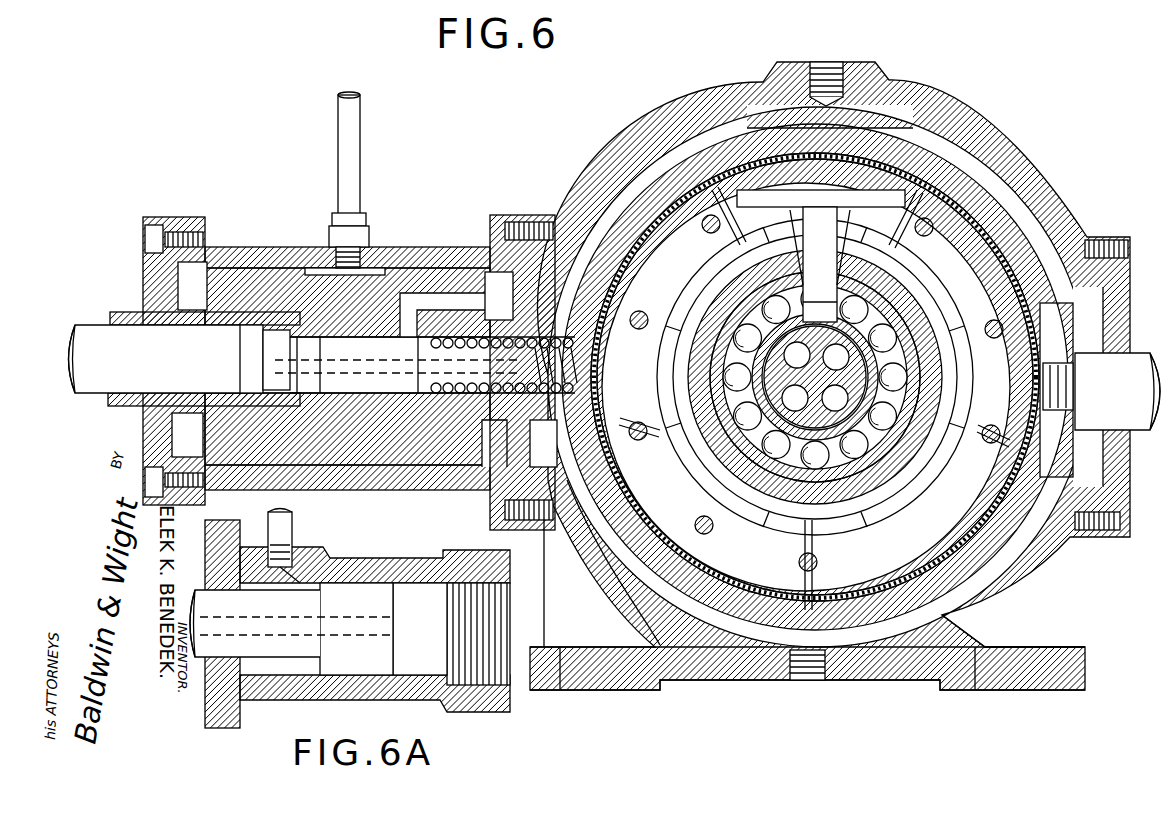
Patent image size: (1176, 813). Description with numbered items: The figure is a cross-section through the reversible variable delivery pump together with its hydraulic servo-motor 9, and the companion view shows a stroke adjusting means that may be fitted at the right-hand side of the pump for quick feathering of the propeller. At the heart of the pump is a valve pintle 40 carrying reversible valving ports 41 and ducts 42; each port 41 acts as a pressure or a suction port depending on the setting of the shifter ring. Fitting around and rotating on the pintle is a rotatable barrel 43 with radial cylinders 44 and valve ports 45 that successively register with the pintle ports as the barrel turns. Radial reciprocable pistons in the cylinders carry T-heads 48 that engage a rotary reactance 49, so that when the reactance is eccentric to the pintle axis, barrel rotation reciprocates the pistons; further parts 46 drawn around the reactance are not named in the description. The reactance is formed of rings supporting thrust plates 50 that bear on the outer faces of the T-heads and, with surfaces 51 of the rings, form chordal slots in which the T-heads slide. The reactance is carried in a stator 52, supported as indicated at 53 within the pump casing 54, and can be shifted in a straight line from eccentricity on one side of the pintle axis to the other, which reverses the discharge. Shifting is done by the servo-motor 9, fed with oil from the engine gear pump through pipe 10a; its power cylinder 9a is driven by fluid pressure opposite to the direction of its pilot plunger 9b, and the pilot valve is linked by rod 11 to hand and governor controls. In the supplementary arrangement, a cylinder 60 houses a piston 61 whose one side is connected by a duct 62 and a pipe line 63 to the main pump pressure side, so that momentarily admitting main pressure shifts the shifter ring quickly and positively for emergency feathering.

In FIG. 6, the servo-motor 9 is at (378, 262).
In FIG. 6, the power cylinder 9a is at (232, 272).
In FIG. 6, the pilot plunger 9b is at (300, 352).
In FIG. 6, the pipe 10a is at (362, 128).
In FIG. 6, the rod 11 is at (104, 325).
In FIG. 6A, the rod 11 is at (290, 623).
In FIG. 6, the valve pintle 40 is at (850, 355).
In FIG. 6, the valving ports 41 is at (895, 338).
In FIG. 6, the ducts 42 is at (835, 392).
In FIG. 6, the rotatable barrel 43 is at (905, 258).
In FIG. 6, the radial cylinders 44 is at (820, 264).
In FIG. 6, the valve ports 45 is at (722, 310).
In FIG. 6, the pins 46 is at (728, 512).
In FIG. 6, the T-heads 48 is at (766, 212).
In FIG. 6, the rotary reactance 49 is at (935, 172).
In FIG. 6, the thrust plates 50 is at (905, 156).
In FIG. 6, the surfaces 51 is at (965, 195).
In FIG. 6, the stator 52 is at (1020, 232).
In FIG. 6, the support 53 is at (790, 640).
In FIG. 6, the casing 54 is at (1055, 650).
In FIG. 6A, the cylinder 60 is at (430, 660).
In FIG. 6A, the piston 61 is at (388, 602).
In FIG. 6A, the duct 62 is at (280, 580).
In FIG. 6A, the pipe line 63 is at (300, 515).